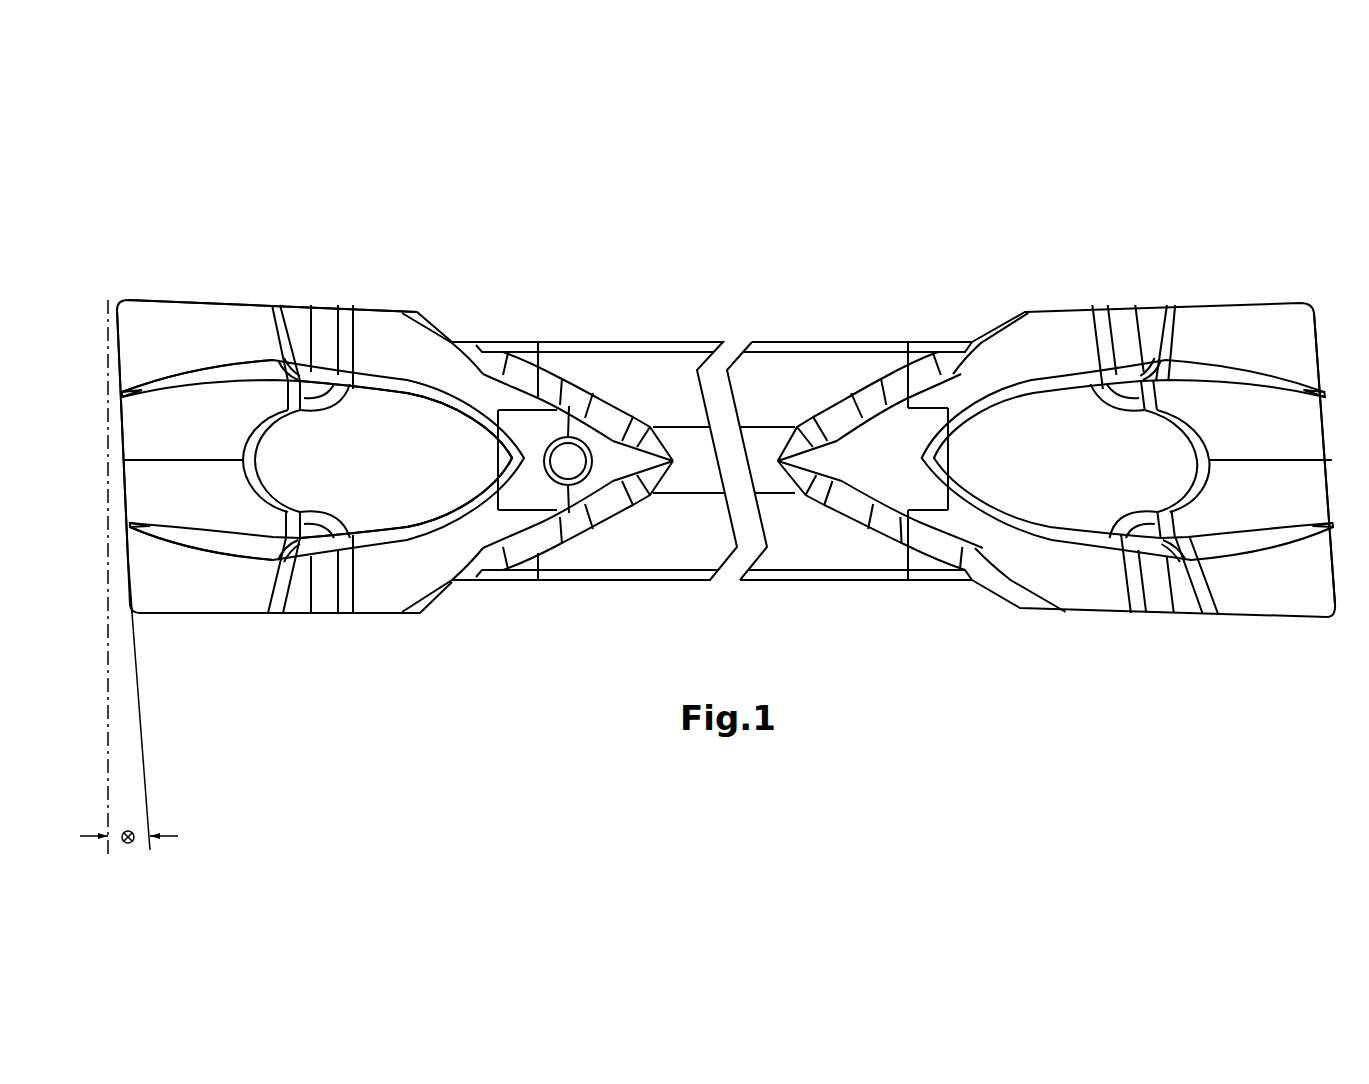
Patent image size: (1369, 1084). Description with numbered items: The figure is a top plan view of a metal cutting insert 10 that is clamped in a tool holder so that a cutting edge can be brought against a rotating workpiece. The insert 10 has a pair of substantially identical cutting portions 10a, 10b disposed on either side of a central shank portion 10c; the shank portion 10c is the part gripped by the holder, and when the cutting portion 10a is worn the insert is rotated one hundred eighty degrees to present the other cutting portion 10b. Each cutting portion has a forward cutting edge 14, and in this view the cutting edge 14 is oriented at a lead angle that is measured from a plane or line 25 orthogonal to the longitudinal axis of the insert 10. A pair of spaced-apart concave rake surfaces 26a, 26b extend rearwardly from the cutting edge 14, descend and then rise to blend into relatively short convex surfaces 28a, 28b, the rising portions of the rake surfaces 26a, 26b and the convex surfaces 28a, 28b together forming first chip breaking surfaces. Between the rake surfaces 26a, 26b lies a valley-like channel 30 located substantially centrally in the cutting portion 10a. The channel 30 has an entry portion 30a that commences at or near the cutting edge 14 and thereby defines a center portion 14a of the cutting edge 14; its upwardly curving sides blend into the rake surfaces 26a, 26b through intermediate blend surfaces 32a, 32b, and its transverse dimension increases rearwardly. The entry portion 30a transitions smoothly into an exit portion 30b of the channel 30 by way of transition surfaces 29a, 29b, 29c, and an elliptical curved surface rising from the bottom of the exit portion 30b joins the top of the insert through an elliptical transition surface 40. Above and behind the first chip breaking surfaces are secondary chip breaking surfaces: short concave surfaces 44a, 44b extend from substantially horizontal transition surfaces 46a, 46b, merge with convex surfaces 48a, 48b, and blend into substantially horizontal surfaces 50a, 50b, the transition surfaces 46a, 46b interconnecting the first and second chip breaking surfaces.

The metal cutting insert 10 is at (660, 246).
The cutting portion 10a is at (360, 444).
The cutting portion 10b is at (1100, 286).
The shank portion 10c is at (710, 336).
The forward cutting edge 14 is at (100, 355).
The center portion of the cutting edge 14a is at (122, 440).
The plane or line orthogonal to the longitudinal axis 25 is at (108, 735).
The concave rake surface 26a is at (203, 585).
The concave rake surface 26b is at (173, 298).
The convex surface 28a is at (278, 612).
The convex surface 28b is at (275, 298).
The transition surface 29a is at (262, 488).
The transition surface 29b is at (290, 397).
The transition surface 29c is at (327, 403).
The valley-like channel 30 is at (192, 437).
The entry portion 30a is at (205, 504).
The exit portion 30b is at (433, 464).
The intermediate blend surface 32a is at (200, 543).
The intermediate blend surface 32b is at (239, 298).
The elliptical transition surface 40 is at (540, 371).
The concave surface 44a is at (330, 617).
The concave surface 44b is at (330, 298).
The transition surface 46a is at (303, 615).
The transition surface 46b is at (298, 298).
The convex surface 48a is at (347, 575).
The convex surface 48b is at (347, 328).
The substantially horizontal surface 50a is at (420, 608).
The substantially horizontal surface 50b is at (433, 363).